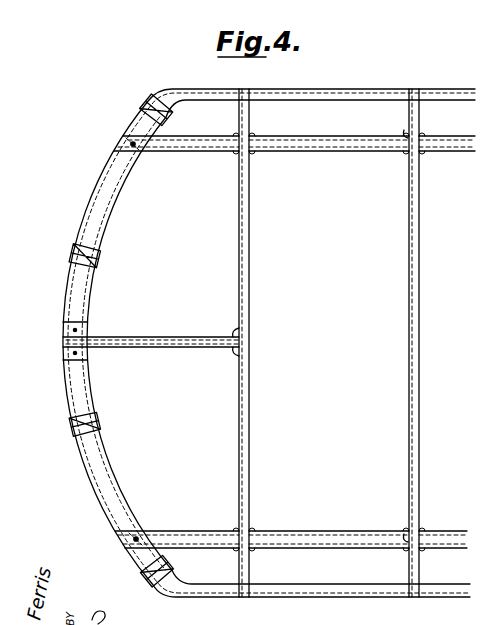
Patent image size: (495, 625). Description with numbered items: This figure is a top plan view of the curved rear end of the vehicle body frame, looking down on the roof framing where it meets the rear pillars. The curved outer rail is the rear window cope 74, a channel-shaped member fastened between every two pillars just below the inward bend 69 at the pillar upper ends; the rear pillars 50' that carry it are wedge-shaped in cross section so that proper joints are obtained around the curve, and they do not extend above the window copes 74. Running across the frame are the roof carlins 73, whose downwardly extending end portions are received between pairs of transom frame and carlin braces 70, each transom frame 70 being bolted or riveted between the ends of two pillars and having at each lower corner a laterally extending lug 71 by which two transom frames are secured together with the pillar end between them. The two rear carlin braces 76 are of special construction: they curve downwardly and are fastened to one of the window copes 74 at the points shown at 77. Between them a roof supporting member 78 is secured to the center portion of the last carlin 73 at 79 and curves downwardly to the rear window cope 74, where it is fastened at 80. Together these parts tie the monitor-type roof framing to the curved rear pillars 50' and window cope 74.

The rear pillar 50' is at (101, 332).
The inward curve of pillar upper end 69 is at (413, 127).
The transom frame and carlin brace 70 is at (365, 127).
The laterally extending lug 71 is at (407, 135).
The roof carlin 73 is at (247, 228).
The window cope 74 is at (102, 172).
The rear carlin brace 76 is at (203, 145).
The fastening of carlin brace to window cope 77 is at (133, 145).
The roof supporting member 78 is at (170, 337).
The securing of roof supporting member to carlin 79 is at (236, 331).
The fastening of roof supporting member to window cope 80 is at (87, 329).